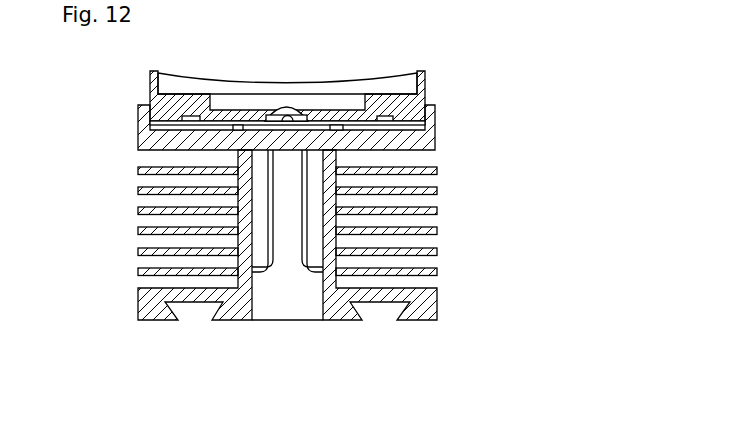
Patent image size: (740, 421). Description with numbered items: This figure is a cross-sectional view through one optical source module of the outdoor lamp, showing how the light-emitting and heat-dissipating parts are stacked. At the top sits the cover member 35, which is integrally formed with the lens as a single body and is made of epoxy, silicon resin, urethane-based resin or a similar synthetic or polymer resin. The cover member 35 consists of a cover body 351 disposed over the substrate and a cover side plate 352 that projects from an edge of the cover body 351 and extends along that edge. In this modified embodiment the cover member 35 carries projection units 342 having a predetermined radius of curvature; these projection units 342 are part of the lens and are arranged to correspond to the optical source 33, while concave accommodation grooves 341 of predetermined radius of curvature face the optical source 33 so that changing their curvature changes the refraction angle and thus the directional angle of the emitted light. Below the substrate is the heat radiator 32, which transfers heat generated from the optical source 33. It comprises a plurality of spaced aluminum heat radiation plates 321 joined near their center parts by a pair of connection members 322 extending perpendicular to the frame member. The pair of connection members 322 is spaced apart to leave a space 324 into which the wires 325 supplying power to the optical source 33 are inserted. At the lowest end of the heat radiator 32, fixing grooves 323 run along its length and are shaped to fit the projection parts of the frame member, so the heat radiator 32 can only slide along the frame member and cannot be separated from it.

The heat radiator 32 is at (284, 265).
The heat radiation plates 321 is at (437, 191).
The connection members 322 is at (335, 222).
The fixing grooves 323 is at (382, 310).
The space 324 is at (258, 292).
The wires 325 is at (310, 290).
The optical source 33 is at (296, 112).
The accommodation grooves 341 is at (330, 121).
The projection units 342 is at (276, 108).
The cover member 35 is at (341, 85).
The cover body 351 is at (400, 108).
The cover side plate 352 is at (422, 85).